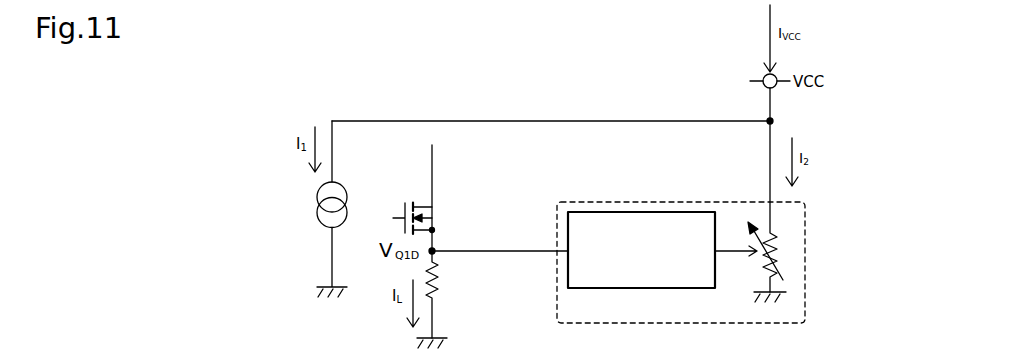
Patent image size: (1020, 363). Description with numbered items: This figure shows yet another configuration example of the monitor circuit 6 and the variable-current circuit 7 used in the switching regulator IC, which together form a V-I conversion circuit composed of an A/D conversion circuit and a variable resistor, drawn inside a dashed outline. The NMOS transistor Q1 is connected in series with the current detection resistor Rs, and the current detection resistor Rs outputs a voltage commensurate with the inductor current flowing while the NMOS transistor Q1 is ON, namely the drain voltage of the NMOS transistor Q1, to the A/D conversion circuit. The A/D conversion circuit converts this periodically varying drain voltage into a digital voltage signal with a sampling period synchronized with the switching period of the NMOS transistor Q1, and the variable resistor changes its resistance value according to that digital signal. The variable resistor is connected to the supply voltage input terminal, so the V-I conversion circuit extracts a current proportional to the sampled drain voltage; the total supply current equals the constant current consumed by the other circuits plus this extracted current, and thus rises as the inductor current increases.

The monitor circuit 6 is at (688, 202).
The variable-current circuit 7 is at (681, 222).
The NMOS transistor Q1 is at (440, 217).
The current detection resistor Rs is at (440, 284).